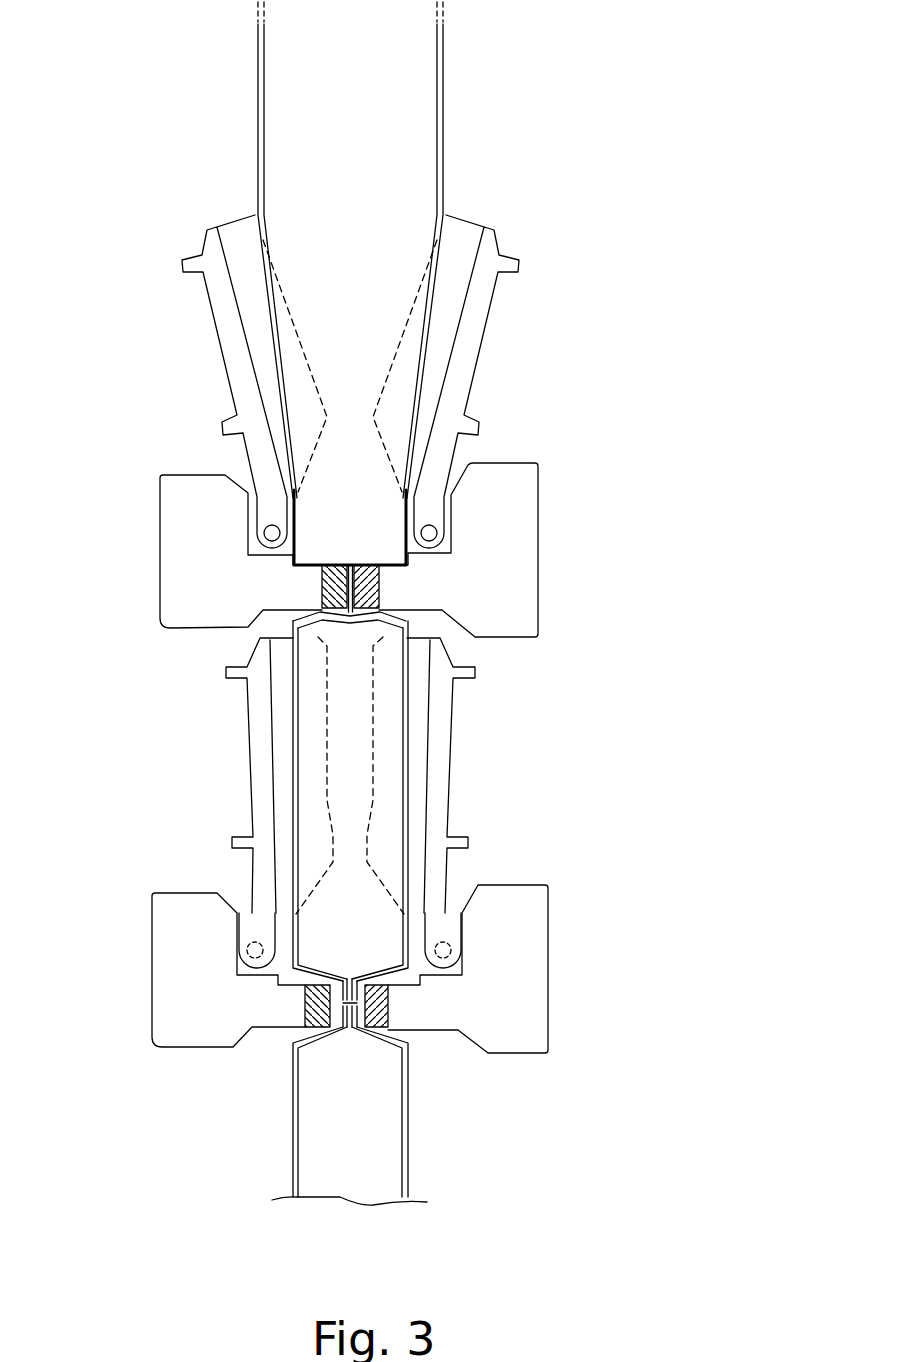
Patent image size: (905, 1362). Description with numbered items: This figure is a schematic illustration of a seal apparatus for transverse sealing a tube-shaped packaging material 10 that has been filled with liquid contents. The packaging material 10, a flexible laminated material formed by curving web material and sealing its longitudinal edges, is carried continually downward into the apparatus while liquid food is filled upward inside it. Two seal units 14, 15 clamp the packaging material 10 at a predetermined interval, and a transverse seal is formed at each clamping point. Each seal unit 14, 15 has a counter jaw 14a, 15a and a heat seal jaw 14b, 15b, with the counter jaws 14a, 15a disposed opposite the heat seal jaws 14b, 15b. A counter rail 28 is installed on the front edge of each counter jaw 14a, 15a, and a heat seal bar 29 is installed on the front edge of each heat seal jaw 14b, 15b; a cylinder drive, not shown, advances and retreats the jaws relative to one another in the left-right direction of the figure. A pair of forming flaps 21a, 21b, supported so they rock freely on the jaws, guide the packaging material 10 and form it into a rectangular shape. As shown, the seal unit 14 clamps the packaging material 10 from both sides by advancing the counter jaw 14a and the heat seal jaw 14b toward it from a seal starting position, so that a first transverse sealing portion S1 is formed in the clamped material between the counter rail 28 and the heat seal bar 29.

The packaging material 10 is at (256, 75).
The forming flap 21a is at (203, 240).
The forming flap 21b is at (500, 246).
The seal unit 14 is at (365, 496).
The counter jaw 14a is at (160, 493).
The heat seal jaw 14b is at (545, 492).
The seal unit 15 is at (340, 845).
The counter jaw 15a is at (152, 898).
The heat seal jaw 15b is at (532, 868).
The counter rail 28 is at (333, 565).
The heat seal bar 29 is at (380, 580).
The first transverse sealing portion S1 is at (352, 565).